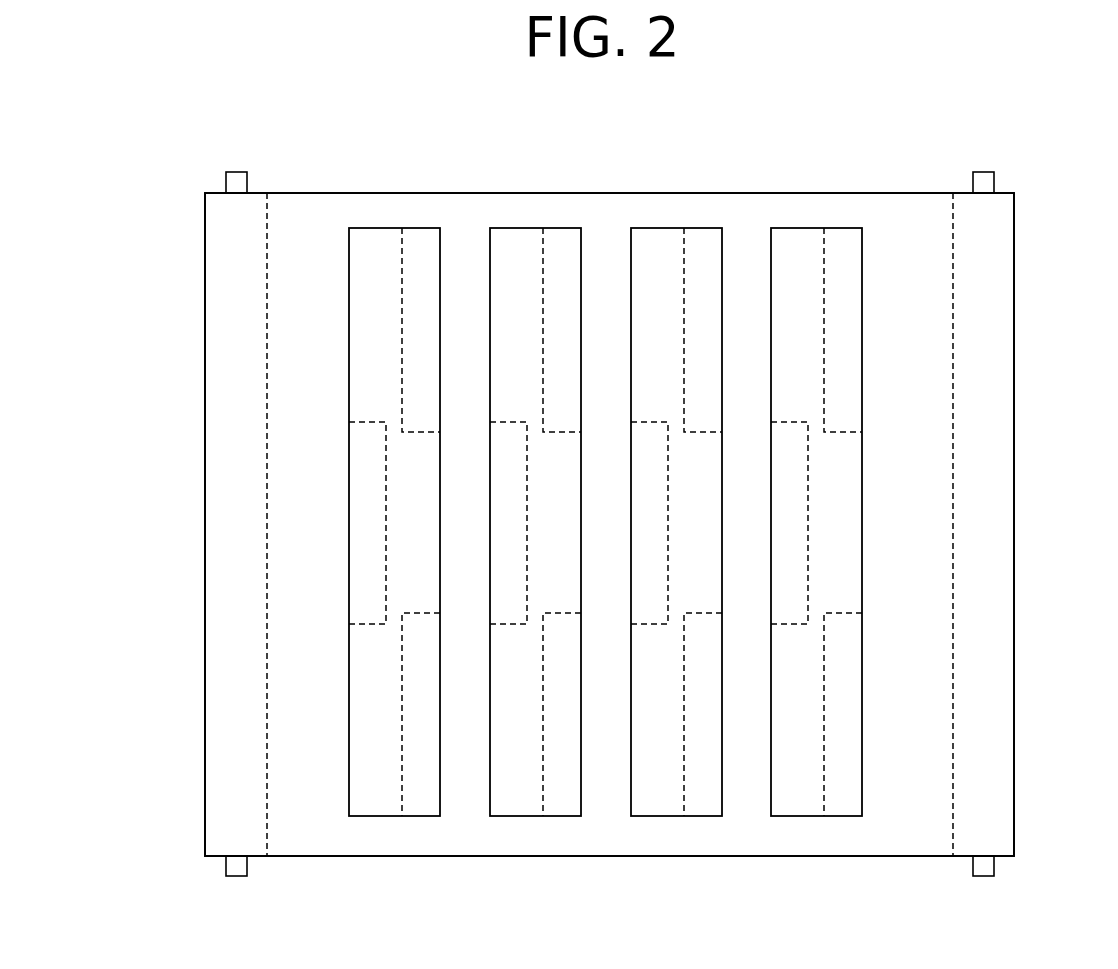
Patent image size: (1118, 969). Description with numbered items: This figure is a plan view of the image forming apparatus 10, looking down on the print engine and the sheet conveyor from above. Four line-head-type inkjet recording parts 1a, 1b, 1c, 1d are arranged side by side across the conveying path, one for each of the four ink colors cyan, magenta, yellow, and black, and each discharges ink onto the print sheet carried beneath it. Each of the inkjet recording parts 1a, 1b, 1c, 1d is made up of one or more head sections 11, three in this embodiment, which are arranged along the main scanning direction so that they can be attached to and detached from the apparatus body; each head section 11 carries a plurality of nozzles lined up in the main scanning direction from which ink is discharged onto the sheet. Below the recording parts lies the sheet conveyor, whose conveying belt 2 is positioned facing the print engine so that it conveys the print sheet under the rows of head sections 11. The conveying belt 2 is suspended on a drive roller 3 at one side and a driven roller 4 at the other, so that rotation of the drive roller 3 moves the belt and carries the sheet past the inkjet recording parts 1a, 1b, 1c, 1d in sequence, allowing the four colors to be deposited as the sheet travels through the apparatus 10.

The battery module 10 is at (1091, 176).
The conveying belt 2 is at (913, 250).
The drive roller 3 is at (226, 185).
The driven roller 4 is at (994, 188).
The inkjet recording part 1a is at (783, 228).
The inkjet recording part 1b is at (643, 228).
The inkjet recording part 1c is at (502, 228).
The inkjet recording part 1d is at (361, 228).
The head section 11 is at (433, 258).